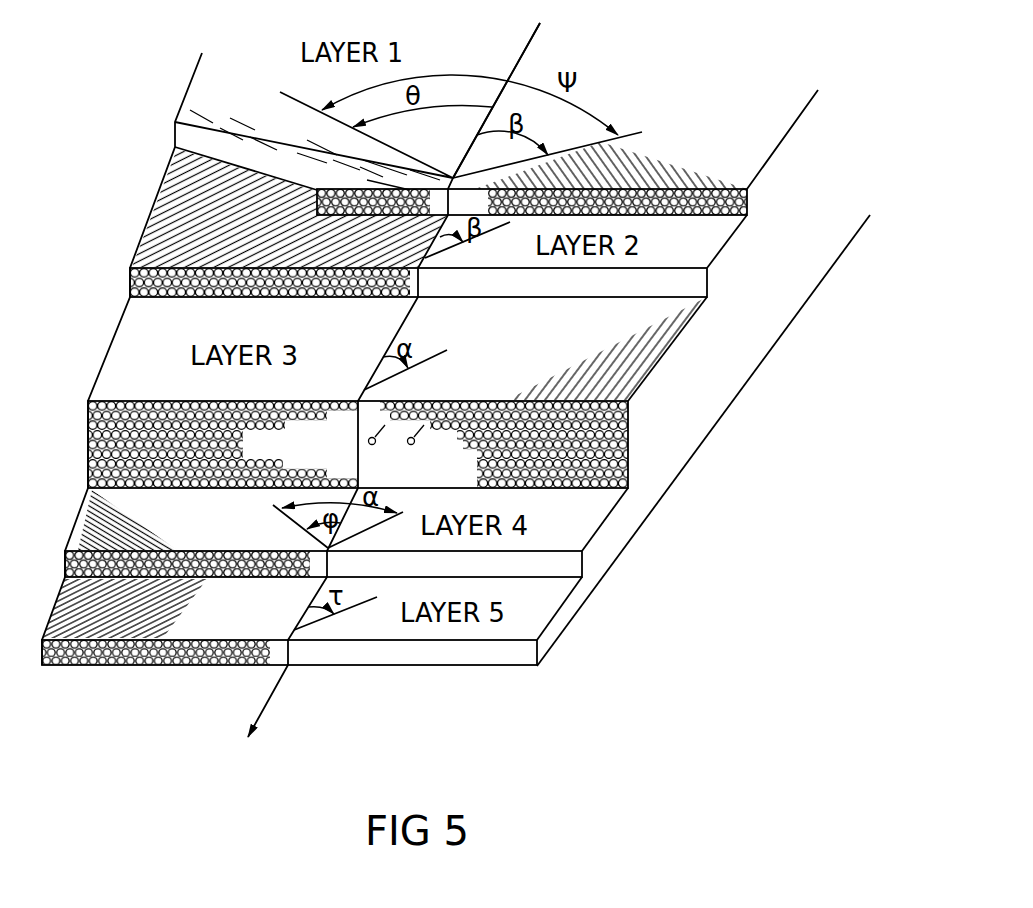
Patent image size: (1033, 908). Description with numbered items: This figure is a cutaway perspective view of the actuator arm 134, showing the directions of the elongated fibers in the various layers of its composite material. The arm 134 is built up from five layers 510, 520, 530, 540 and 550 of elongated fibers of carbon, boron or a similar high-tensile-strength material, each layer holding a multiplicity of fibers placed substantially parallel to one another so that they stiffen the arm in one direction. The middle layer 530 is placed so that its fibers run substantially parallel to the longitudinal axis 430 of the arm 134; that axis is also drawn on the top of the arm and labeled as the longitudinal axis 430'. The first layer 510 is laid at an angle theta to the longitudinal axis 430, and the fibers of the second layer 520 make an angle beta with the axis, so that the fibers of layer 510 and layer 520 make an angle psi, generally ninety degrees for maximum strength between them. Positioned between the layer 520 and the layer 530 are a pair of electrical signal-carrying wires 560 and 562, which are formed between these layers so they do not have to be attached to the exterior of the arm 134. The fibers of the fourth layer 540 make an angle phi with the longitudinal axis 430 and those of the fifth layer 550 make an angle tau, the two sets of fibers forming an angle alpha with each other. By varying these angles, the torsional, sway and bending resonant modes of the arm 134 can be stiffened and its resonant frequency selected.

The first layer 510 is at (292, 121).
The second layer 520 is at (602, 296).
The middle layer 530 is at (334, 459).
The fourth layer 540 is at (479, 577).
The fifth layer 550 is at (432, 667).
The signal-carrying wire 560 is at (381, 439).
The signal-carrying wire 562 is at (420, 439).
The longitudinal axis 430 is at (345, 398).
The longitudinal axis (placed on top of arm) 430' is at (547, 100).
The actuator arm 134 is at (664, 496).